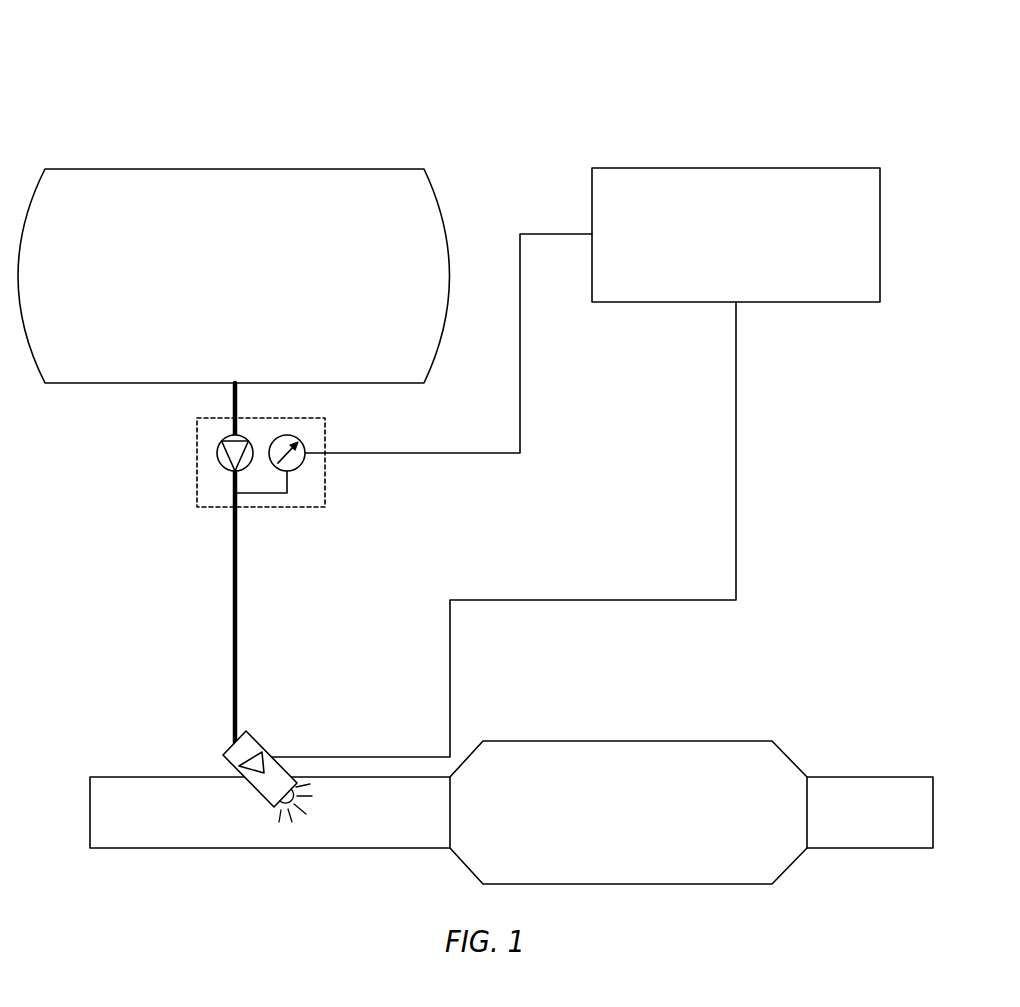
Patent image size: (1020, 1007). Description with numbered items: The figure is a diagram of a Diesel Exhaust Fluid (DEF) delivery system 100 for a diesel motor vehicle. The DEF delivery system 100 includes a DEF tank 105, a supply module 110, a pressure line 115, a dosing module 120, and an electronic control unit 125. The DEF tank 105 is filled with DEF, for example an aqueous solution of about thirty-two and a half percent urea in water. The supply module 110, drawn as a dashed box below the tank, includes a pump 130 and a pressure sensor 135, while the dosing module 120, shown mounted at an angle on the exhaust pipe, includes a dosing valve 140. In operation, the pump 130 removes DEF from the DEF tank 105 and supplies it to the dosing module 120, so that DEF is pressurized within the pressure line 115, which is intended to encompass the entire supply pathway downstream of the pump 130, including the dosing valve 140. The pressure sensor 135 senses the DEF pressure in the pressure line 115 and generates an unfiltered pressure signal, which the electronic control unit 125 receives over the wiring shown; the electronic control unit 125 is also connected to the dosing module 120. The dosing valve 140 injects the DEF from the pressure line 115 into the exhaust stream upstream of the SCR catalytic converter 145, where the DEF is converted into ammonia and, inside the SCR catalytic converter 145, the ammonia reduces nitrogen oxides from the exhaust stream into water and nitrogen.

The DEF delivery system 100 is at (226, 50).
The DEF tank 105 is at (125, 168).
The supply module 110 is at (249, 461).
The pressure line 115 is at (233, 632).
The dosing module 120 is at (226, 752).
The electronic control unit 125 is at (700, 168).
The pump 130 is at (221, 468).
The pressure sensor 135 is at (301, 467).
The dosing valve 140 is at (266, 750).
The SCR catalytic converter 145 is at (628, 741).